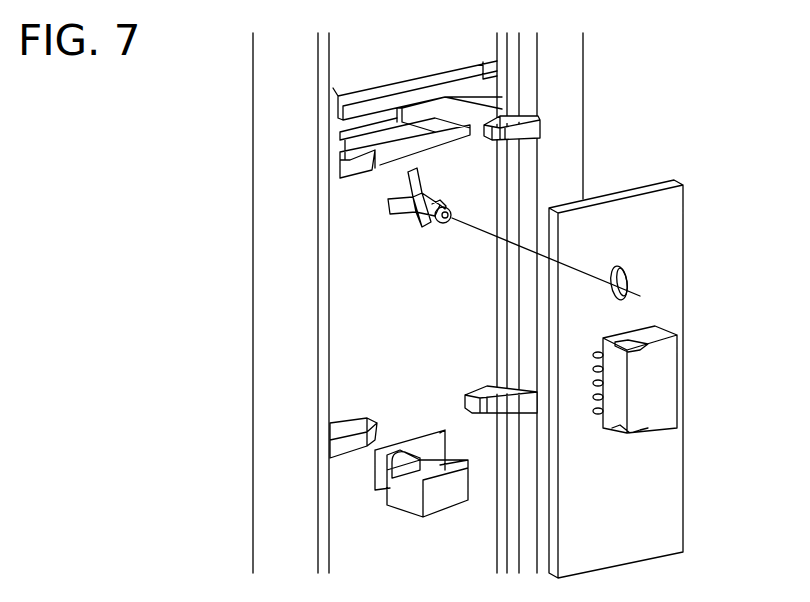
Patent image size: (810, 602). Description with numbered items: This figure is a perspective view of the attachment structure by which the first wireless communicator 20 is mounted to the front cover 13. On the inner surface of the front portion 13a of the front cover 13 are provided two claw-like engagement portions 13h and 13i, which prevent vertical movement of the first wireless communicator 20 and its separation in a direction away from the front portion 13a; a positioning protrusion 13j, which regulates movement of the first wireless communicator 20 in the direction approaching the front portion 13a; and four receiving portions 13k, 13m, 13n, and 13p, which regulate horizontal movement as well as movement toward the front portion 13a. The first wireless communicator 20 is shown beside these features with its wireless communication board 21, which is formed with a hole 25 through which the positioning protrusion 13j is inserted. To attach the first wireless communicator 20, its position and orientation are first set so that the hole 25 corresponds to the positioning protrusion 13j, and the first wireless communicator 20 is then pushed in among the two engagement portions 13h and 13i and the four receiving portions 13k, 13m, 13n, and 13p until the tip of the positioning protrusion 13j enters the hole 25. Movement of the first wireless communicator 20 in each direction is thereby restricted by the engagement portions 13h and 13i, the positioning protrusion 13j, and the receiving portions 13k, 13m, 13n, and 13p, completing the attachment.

The front cover 13 is at (250, 265).
The front portion 13a is at (397, 320).
The engagement portion 13h is at (442, 112).
The engagement portion 13i is at (438, 490).
The positioning protrusion 13j is at (425, 226).
The receiving portion 13k is at (526, 118).
The receiving portion 13m is at (350, 160).
The receiving portion 13n is at (350, 428).
The receiving portion 13p is at (490, 394).
The first wireless communicator 20 is at (686, 214).
The wireless communication board 21 is at (650, 490).
The hole 25 is at (630, 283).